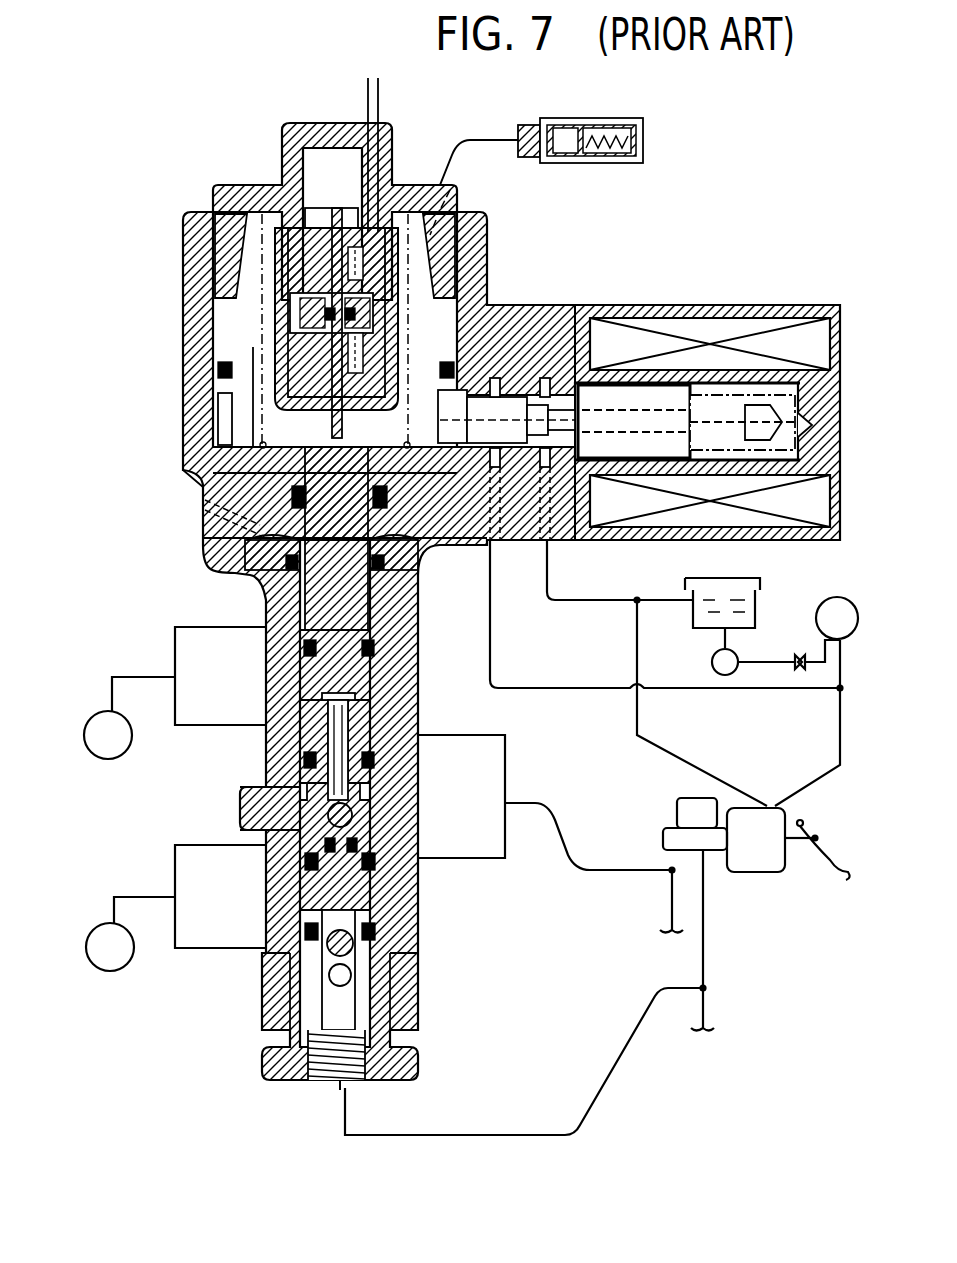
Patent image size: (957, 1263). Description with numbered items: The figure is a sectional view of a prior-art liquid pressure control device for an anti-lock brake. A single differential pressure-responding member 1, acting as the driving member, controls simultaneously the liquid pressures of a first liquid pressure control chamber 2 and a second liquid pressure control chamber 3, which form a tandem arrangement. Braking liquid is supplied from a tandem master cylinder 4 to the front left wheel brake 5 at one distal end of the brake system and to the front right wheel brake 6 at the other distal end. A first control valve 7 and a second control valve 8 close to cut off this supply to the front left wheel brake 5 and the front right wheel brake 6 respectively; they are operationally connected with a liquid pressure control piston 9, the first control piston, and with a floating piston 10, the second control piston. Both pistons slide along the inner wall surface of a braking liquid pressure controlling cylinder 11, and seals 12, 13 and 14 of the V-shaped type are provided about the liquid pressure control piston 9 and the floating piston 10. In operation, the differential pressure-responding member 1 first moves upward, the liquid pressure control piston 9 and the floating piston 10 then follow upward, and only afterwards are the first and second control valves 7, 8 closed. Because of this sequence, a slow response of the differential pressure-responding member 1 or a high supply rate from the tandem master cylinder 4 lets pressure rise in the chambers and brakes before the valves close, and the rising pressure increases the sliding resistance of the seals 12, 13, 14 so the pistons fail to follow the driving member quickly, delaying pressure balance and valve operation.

The differential pressure-responding member 1 is at (215, 357).
The first liquid pressure control chamber 2 is at (380, 702).
The second liquid pressure control chamber 3 is at (262, 955).
The tandem master cylinder 4 is at (676, 835).
The front left wheel brake 5 is at (100, 712).
The front right wheel brake 6 is at (110, 922).
The first control valve 7 is at (349, 800).
The second control valve 8 is at (382, 948).
The liquid pressure control piston 9 is at (375, 668).
The floating piston 10 is at (296, 772).
The braking liquid pressure controlling cylinder 11 is at (292, 598).
The seal 12 is at (372, 646).
The seal 13 is at (380, 757).
The seal 14 is at (385, 858).